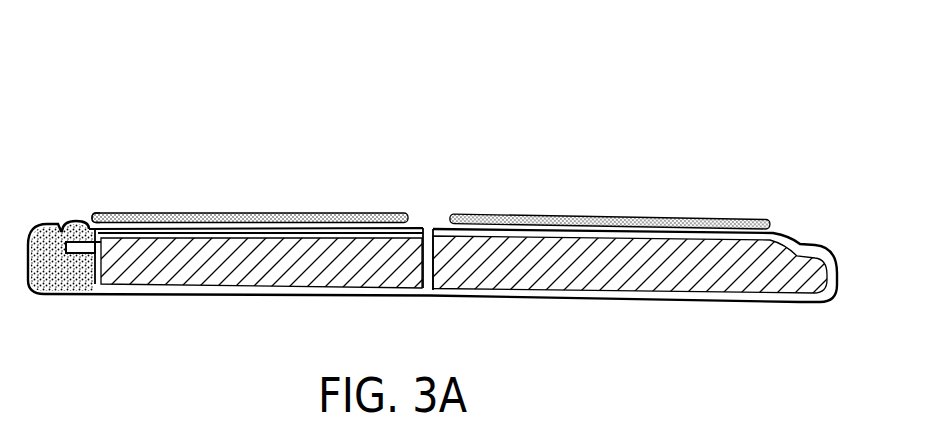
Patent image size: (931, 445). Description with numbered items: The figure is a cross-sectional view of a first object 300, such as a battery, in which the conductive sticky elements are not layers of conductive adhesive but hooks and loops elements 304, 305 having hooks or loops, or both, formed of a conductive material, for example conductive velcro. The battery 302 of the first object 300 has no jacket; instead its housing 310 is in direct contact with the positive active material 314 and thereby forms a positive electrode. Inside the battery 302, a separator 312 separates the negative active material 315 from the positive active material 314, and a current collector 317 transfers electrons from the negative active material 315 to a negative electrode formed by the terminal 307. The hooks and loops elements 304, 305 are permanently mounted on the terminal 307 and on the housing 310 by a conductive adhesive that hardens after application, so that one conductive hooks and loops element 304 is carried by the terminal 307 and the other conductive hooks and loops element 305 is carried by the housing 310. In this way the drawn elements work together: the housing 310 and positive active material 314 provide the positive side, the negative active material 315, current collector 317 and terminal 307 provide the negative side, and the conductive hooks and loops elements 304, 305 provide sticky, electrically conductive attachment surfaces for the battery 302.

The first object 300 is at (268, 112).
The battery 302 is at (598, 296).
The hooks and loops element 304 is at (762, 220).
The hooks and loops element 305 is at (99, 211).
The terminal 307 is at (148, 225).
The housing 310 is at (85, 286).
The separator 312 is at (430, 232).
The positive active material 314 is at (562, 260).
The negative active material 315 is at (343, 257).
The current collector 317 is at (240, 237).